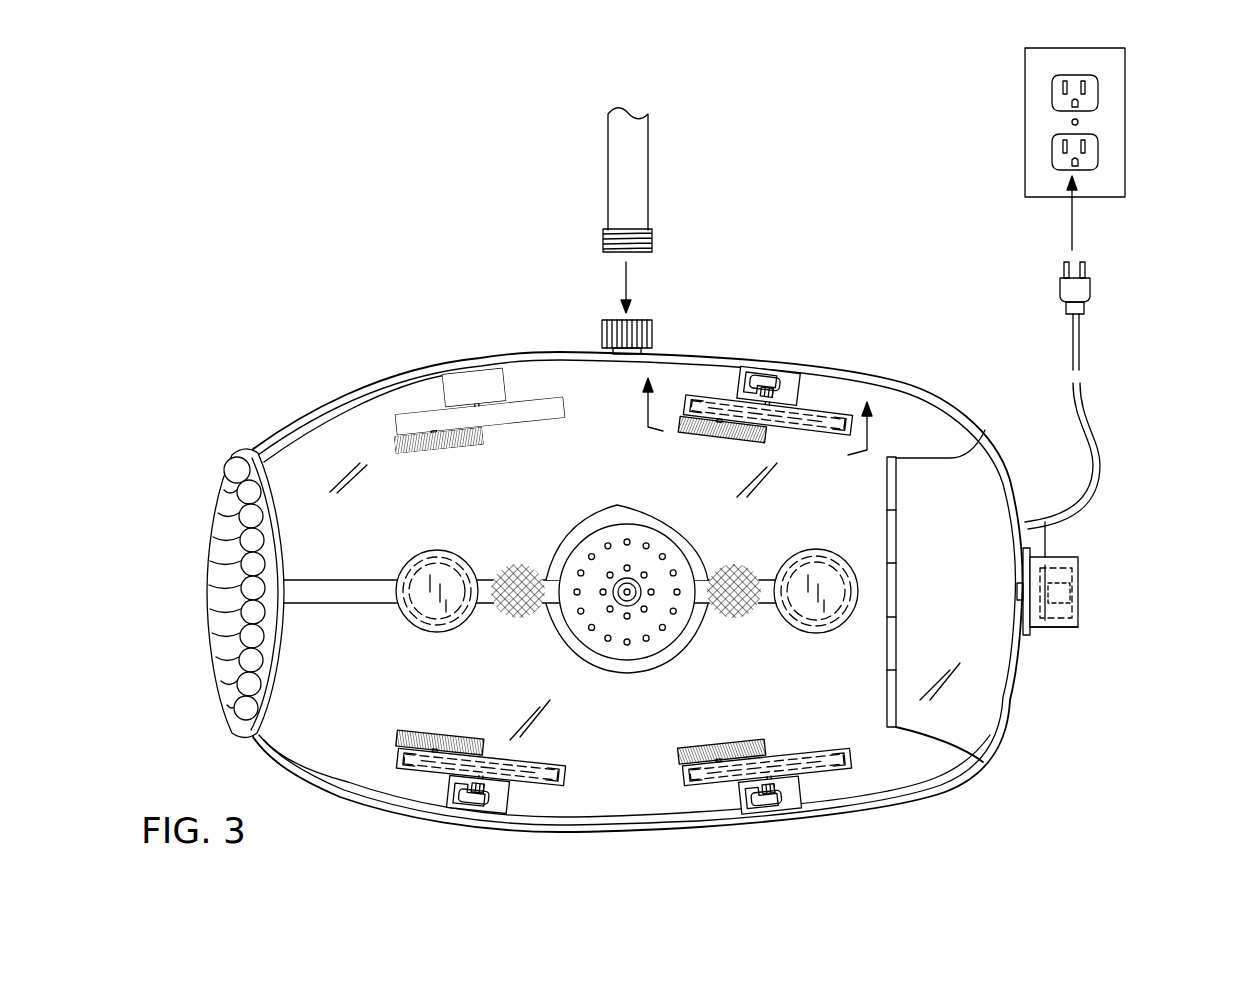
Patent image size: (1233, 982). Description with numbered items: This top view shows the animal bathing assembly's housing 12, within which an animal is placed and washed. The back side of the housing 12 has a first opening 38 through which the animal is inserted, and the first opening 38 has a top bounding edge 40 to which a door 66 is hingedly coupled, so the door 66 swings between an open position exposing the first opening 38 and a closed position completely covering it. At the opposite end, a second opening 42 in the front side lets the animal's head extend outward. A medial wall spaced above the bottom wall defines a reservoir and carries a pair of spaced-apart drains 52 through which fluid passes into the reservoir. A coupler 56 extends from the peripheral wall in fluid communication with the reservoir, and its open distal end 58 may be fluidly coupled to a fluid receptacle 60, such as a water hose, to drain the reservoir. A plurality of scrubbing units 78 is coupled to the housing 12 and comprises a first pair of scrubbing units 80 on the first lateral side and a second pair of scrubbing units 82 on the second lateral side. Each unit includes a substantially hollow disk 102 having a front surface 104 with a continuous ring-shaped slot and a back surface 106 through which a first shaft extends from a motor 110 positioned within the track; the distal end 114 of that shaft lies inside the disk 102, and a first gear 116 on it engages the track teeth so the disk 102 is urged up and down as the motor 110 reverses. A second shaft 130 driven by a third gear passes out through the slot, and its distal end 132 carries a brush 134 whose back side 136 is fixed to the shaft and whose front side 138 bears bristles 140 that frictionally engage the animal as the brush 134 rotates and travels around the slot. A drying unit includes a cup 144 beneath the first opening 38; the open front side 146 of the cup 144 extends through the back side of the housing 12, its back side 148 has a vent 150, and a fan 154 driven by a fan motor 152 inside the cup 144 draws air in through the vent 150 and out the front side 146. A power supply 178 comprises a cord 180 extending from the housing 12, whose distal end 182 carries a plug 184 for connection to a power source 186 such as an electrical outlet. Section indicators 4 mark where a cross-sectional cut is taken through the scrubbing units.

The housing 12 is at (338, 352).
The first opening 38 is at (980, 430).
The top bounding edge 40 is at (889, 480).
The second opening 42 is at (222, 597).
The drains 52 is at (617, 505).
The coupler 56 is at (607, 320).
The distal end 58 is at (641, 320).
The fluid receptacle 60 is at (636, 178).
The door 66 is at (995, 690).
The scrubbing units 78 is at (615, 809).
The first pair of scrubbing units 80 is at (402, 784).
The second pair of scrubbing units 82 is at (571, 395).
The disk 102 is at (393, 415).
The front surface 104 is at (556, 410).
The back surface 106 is at (547, 397).
The motor 110 is at (770, 372).
The distal end 114 is at (773, 430).
The first gear 116 is at (822, 398).
The second shaft 130 is at (406, 427).
The distal end 132 is at (430, 450).
The brush 134 is at (395, 445).
The back side 136 is at (482, 437).
The front side 138 is at (493, 445).
The bristles 140 is at (433, 455).
The cup 144 is at (1052, 630).
The front side 146 is at (1028, 565).
The back side 148 is at (1078, 570).
The vent 150 is at (1090, 590).
The fan motor 152 is at (1060, 570).
The fan 154 is at (1053, 530).
The power supply 178 is at (1082, 408).
The cord 180 is at (1073, 367).
The distal end 182 is at (1082, 320).
The plug 184 is at (1067, 287).
The power source 186 is at (1112, 118).
The section line 4 is at (755, 416).